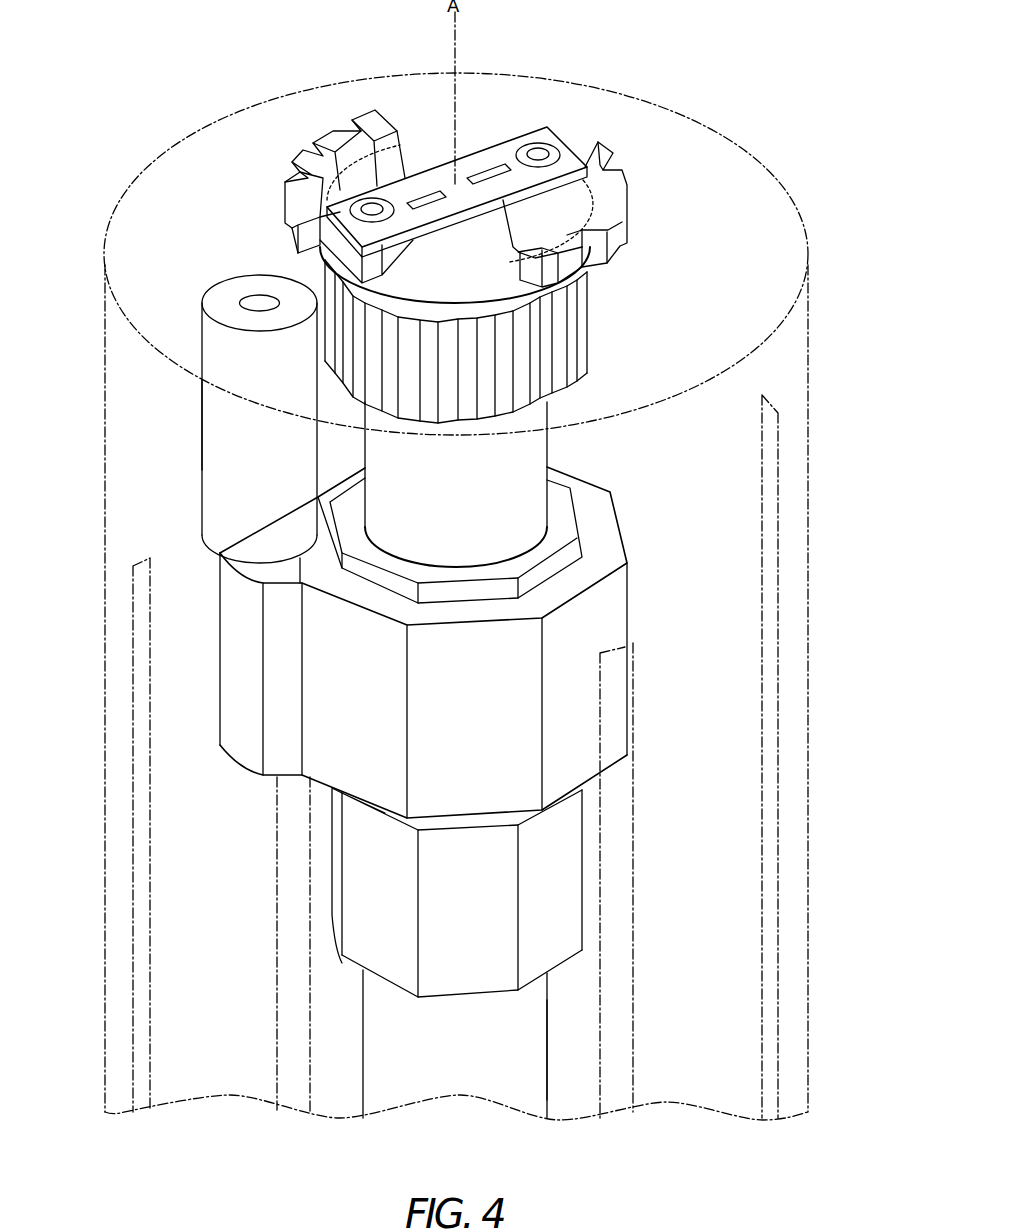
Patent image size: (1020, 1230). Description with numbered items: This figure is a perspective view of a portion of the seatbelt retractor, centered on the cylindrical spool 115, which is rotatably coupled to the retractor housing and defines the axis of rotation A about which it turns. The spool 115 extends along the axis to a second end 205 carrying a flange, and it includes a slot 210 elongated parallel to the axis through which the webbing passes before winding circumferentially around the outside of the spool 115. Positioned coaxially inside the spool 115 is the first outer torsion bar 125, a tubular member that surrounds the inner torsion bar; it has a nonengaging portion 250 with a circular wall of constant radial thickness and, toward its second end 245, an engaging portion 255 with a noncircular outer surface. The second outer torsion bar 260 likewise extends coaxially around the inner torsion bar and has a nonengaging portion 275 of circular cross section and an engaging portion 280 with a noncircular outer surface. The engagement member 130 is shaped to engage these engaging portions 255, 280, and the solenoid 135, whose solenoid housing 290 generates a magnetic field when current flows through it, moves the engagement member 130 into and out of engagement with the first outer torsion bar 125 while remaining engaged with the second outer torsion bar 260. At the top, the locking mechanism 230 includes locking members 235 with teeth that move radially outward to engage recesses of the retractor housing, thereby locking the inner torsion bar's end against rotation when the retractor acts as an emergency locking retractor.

The spool 115 is at (812, 400).
The first outer torsion bar 125 is at (550, 1058).
The engagement member 130 is at (630, 607).
The solenoid 135 is at (200, 433).
The second end 205 is at (762, 158).
The slot 210 is at (780, 733).
The locking mechanism 230 is at (645, 182).
The locking member 235 is at (323, 130).
The second end 245 is at (488, 827).
The nonengaging portion 250 is at (363, 1022).
The engaging portion 255 is at (330, 888).
The second outer torsion bar 260 is at (548, 418).
The nonengaging portion 275 is at (548, 457).
The engaging portion 280 is at (580, 520).
The solenoid housing 290 is at (200, 490).